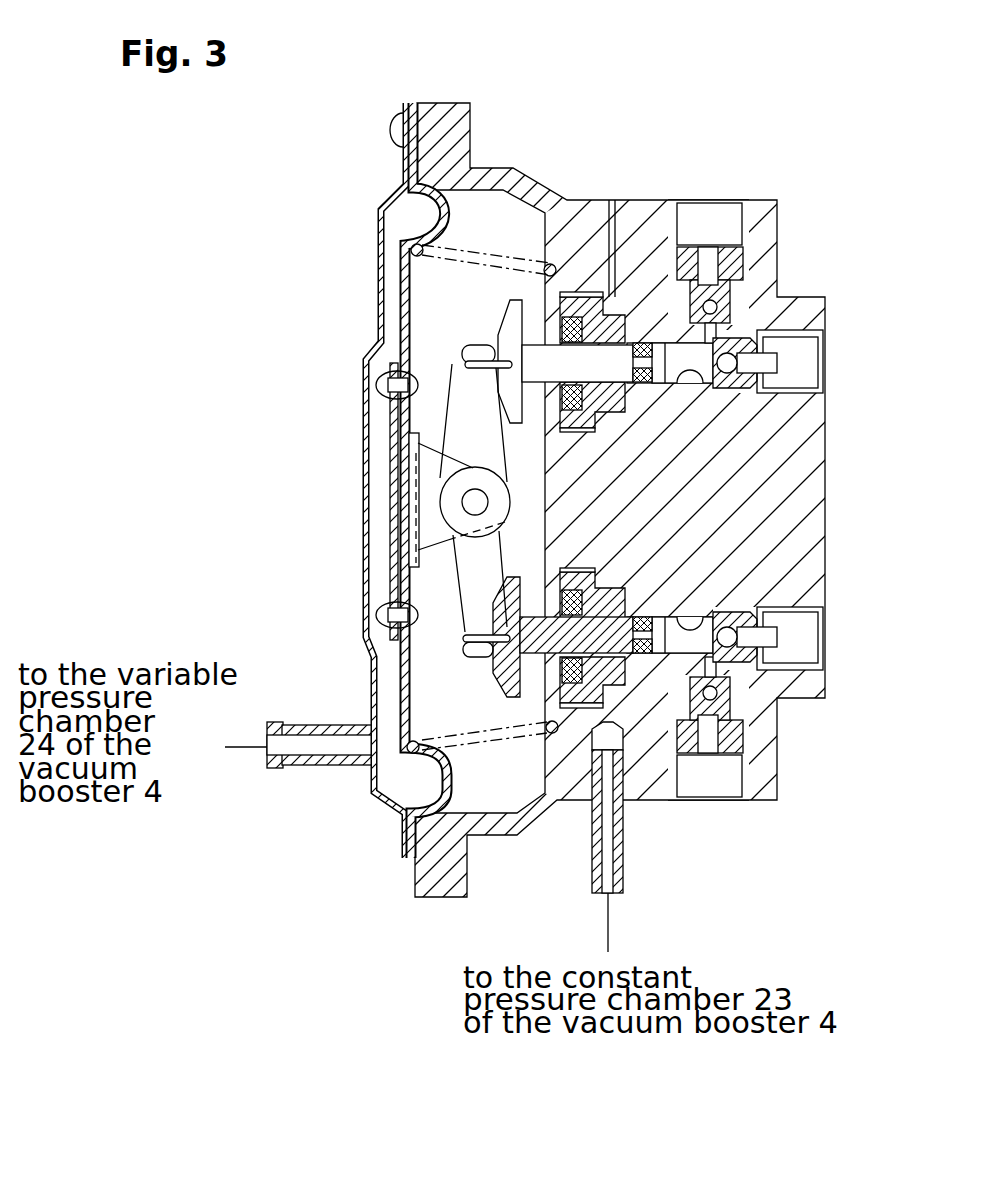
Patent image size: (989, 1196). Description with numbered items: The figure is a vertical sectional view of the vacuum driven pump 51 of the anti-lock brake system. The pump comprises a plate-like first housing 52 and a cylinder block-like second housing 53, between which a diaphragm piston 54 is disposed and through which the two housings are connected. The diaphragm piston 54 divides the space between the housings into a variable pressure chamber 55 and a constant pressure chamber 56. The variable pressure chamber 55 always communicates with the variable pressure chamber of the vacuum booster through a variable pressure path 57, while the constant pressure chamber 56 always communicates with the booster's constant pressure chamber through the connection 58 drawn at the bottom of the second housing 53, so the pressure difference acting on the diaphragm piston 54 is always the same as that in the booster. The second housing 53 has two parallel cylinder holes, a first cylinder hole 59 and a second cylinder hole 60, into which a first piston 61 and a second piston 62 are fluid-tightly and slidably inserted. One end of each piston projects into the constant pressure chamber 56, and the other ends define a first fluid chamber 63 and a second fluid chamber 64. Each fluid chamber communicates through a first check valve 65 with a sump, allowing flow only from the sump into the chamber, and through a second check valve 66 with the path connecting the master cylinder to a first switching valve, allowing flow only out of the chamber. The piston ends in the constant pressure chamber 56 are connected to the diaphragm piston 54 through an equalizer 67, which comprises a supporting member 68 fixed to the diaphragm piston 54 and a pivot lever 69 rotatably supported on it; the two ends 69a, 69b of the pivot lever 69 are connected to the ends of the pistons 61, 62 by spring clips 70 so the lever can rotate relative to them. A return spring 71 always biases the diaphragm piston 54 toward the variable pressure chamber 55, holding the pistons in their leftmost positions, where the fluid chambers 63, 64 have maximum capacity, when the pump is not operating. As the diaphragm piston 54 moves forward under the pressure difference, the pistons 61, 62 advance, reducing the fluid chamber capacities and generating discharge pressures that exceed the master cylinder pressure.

The vacuum driven pump 51 is at (599, 85).
The first housing 52 is at (378, 250).
The second housing 53 is at (560, 207).
The diaphragm piston 54 is at (400, 306).
The variable pressure chamber 55 is at (380, 446).
The constant pressure chamber 56 is at (468, 305).
The variable pressure path 57 is at (236, 752).
The pipe to constant pressure chamber 58 is at (610, 918).
The first cylinder hole 59 is at (712, 612).
The second cylinder hole 60 is at (688, 362).
The first piston 61 is at (523, 613).
The second piston 62 is at (540, 372).
The first fluid chamber 63 is at (668, 655).
The second fluid chamber 64 is at (673, 355).
The first check valve 65 is at (712, 305).
The second check valve 66 is at (738, 362).
The equalizer 67 is at (311, 497).
The supporting member 68 is at (428, 515).
The pivot lever 69 is at (450, 590).
The end of pivot lever 69a is at (472, 660).
The end of pivot lever 69b is at (480, 347).
The spring clip 70 is at (468, 369).
The return spring 71 is at (440, 757).